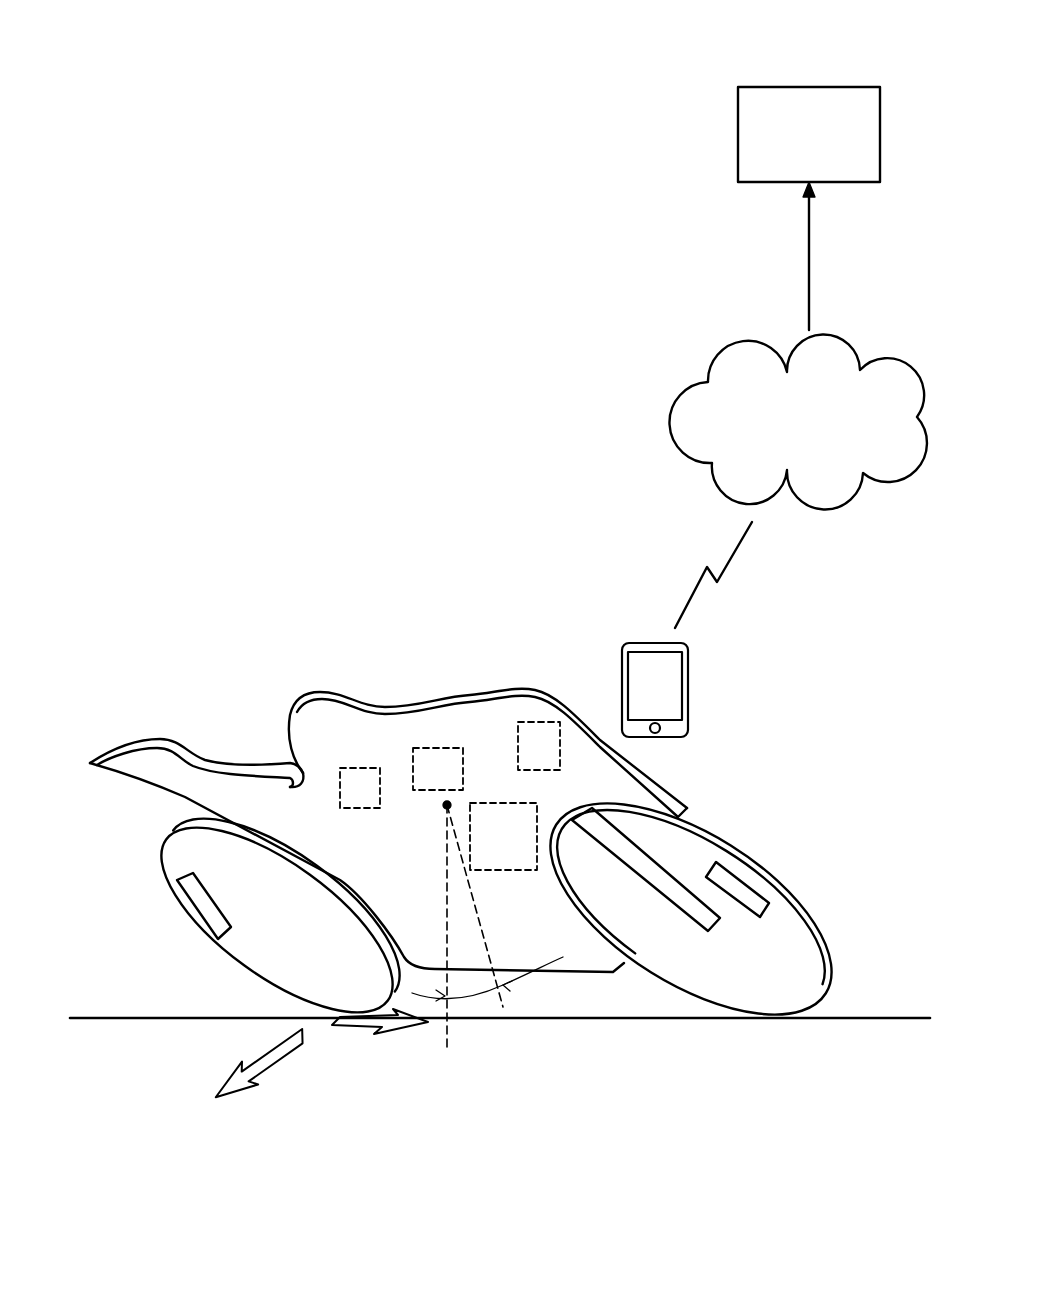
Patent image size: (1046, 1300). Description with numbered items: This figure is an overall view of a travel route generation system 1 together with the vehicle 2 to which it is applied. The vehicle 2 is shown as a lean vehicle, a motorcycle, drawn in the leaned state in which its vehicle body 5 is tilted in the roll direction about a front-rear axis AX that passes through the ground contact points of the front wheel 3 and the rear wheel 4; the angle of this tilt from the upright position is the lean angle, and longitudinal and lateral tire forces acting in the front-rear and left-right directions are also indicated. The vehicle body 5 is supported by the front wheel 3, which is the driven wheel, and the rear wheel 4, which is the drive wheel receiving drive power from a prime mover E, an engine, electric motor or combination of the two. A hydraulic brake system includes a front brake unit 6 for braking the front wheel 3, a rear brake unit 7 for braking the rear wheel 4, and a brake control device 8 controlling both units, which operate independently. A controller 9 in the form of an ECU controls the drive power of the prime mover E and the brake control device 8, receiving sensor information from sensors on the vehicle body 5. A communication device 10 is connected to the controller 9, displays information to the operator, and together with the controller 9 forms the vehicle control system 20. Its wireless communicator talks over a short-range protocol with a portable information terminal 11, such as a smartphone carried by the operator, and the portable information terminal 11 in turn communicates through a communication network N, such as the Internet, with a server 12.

The travel route generation system 1 is at (562, 361).
The vehicle 2 is at (600, 633).
The front wheel 3 is at (781, 878).
The rear wheel 4 is at (160, 848).
The vehicle body 5 is at (413, 705).
The front brake unit 6 is at (742, 882).
The rear brake unit 7 is at (195, 898).
The brake control device 8 is at (360, 768).
The controller 9 is at (440, 747).
The communication device 10 is at (533, 722).
The portable information terminal 11 is at (688, 678).
The server 12 is at (843, 87).
The vehicle control system 20 is at (543, 612).
The prime mover E is at (540, 813).
The communication network N is at (900, 482).
The front-rear axis AX is at (865, 1023).